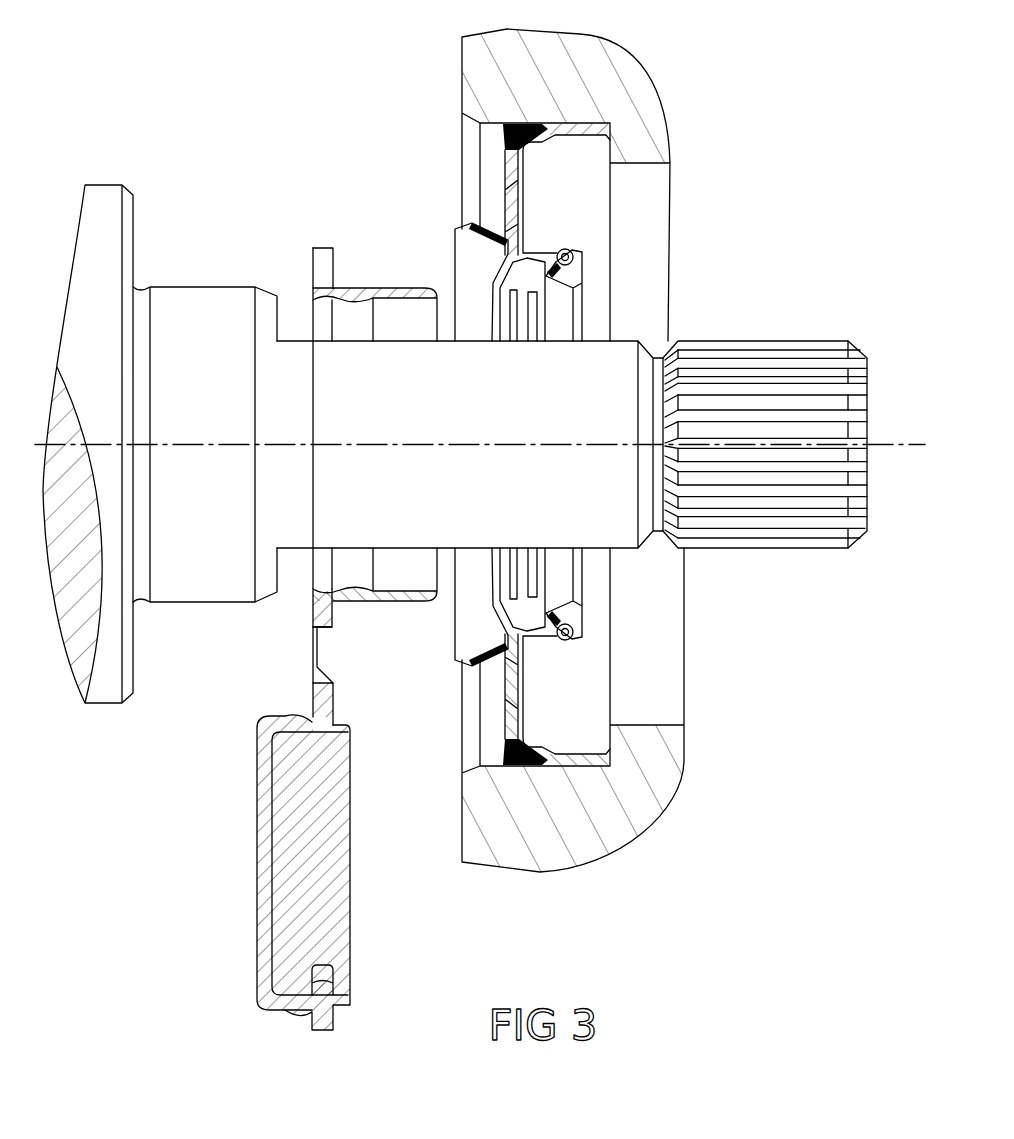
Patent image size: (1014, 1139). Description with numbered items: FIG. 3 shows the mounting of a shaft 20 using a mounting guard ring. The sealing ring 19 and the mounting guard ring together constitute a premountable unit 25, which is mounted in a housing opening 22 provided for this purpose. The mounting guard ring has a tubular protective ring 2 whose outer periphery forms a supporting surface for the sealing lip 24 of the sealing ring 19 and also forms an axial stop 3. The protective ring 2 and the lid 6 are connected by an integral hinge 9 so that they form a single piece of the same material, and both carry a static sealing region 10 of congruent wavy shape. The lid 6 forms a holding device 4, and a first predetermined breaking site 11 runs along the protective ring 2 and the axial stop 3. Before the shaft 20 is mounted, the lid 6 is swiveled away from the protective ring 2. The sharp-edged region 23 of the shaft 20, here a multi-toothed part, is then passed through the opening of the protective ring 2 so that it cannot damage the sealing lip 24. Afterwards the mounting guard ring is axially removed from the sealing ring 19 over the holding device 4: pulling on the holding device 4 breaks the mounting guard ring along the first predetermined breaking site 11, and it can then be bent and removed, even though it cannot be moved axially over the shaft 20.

The protective ring 2 is at (385, 597).
The axial stop 3 is at (325, 617).
The holding device 4 is at (323, 973).
The lid 6 is at (262, 812).
The integral hinge 9 is at (312, 637).
The static sealing region 10 is at (350, 289).
The first predetermined breaking site 11 is at (322, 262).
The sealing ring 19 is at (475, 233).
The shaft 20 is at (603, 358).
The housing opening 22 is at (495, 122).
The sharp-edged region 23 is at (752, 340).
The sealing lip 24 is at (578, 270).
The premountable unit 25 is at (436, 214).